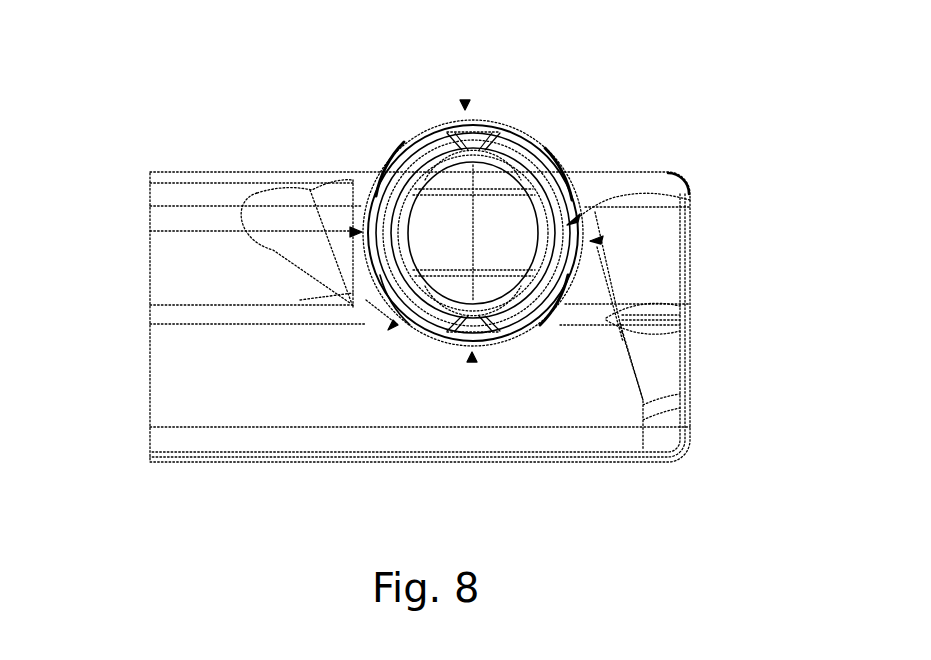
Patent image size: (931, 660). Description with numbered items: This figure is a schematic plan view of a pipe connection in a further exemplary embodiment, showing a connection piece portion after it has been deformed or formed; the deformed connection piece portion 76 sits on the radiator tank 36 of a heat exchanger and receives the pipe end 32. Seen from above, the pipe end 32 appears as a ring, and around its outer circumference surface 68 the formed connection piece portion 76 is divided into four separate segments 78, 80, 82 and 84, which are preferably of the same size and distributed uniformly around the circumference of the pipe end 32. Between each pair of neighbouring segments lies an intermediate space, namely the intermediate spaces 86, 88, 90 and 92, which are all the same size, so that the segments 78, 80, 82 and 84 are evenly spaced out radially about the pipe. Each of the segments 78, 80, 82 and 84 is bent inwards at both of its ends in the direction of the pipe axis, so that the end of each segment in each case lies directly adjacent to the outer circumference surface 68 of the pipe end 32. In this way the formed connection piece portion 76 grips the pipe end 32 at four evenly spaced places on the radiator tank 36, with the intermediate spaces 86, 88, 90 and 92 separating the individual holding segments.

The pipe end 32 is at (493, 135).
The radiator tank 36 is at (645, 236).
The outer circumference surface 68 is at (690, 200).
The deformed connection piece portion 76 is at (396, 328).
The segment 78 is at (552, 152).
The segment 80 is at (405, 143).
The segment 82 is at (355, 291).
The segment 84 is at (555, 300).
The intermediate space 86 is at (465, 102).
The intermediate space 88 is at (472, 360).
The intermediate space 90 is at (352, 232).
The intermediate space 92 is at (598, 241).